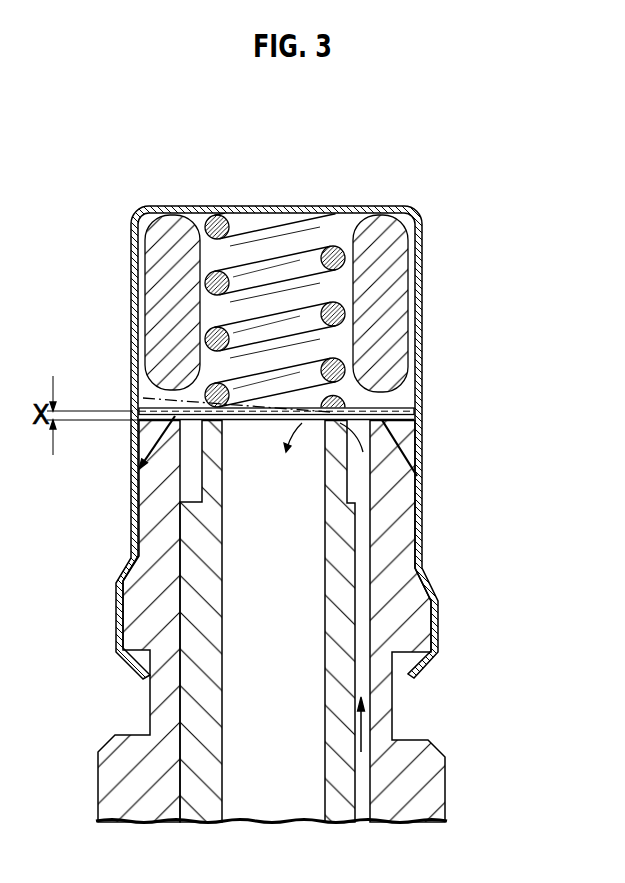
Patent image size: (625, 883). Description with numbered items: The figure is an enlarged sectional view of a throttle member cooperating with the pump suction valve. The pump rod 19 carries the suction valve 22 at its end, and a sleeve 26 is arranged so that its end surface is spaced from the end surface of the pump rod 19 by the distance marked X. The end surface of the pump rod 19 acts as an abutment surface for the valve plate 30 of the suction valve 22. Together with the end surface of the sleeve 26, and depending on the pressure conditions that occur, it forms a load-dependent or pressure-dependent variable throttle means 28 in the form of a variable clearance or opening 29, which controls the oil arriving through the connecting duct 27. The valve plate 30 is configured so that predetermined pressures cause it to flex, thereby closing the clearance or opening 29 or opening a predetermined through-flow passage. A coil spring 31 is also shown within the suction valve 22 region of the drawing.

The pump rod 19 is at (390, 596).
The suction valve 22 is at (432, 282).
The sleeve 26 is at (342, 525).
The connecting duct 27 is at (362, 651).
The throttle means 28 is at (385, 409).
The clearance or opening 29 is at (414, 420).
The valve plate 30 is at (386, 399).
The coil spring 31 is at (346, 256).